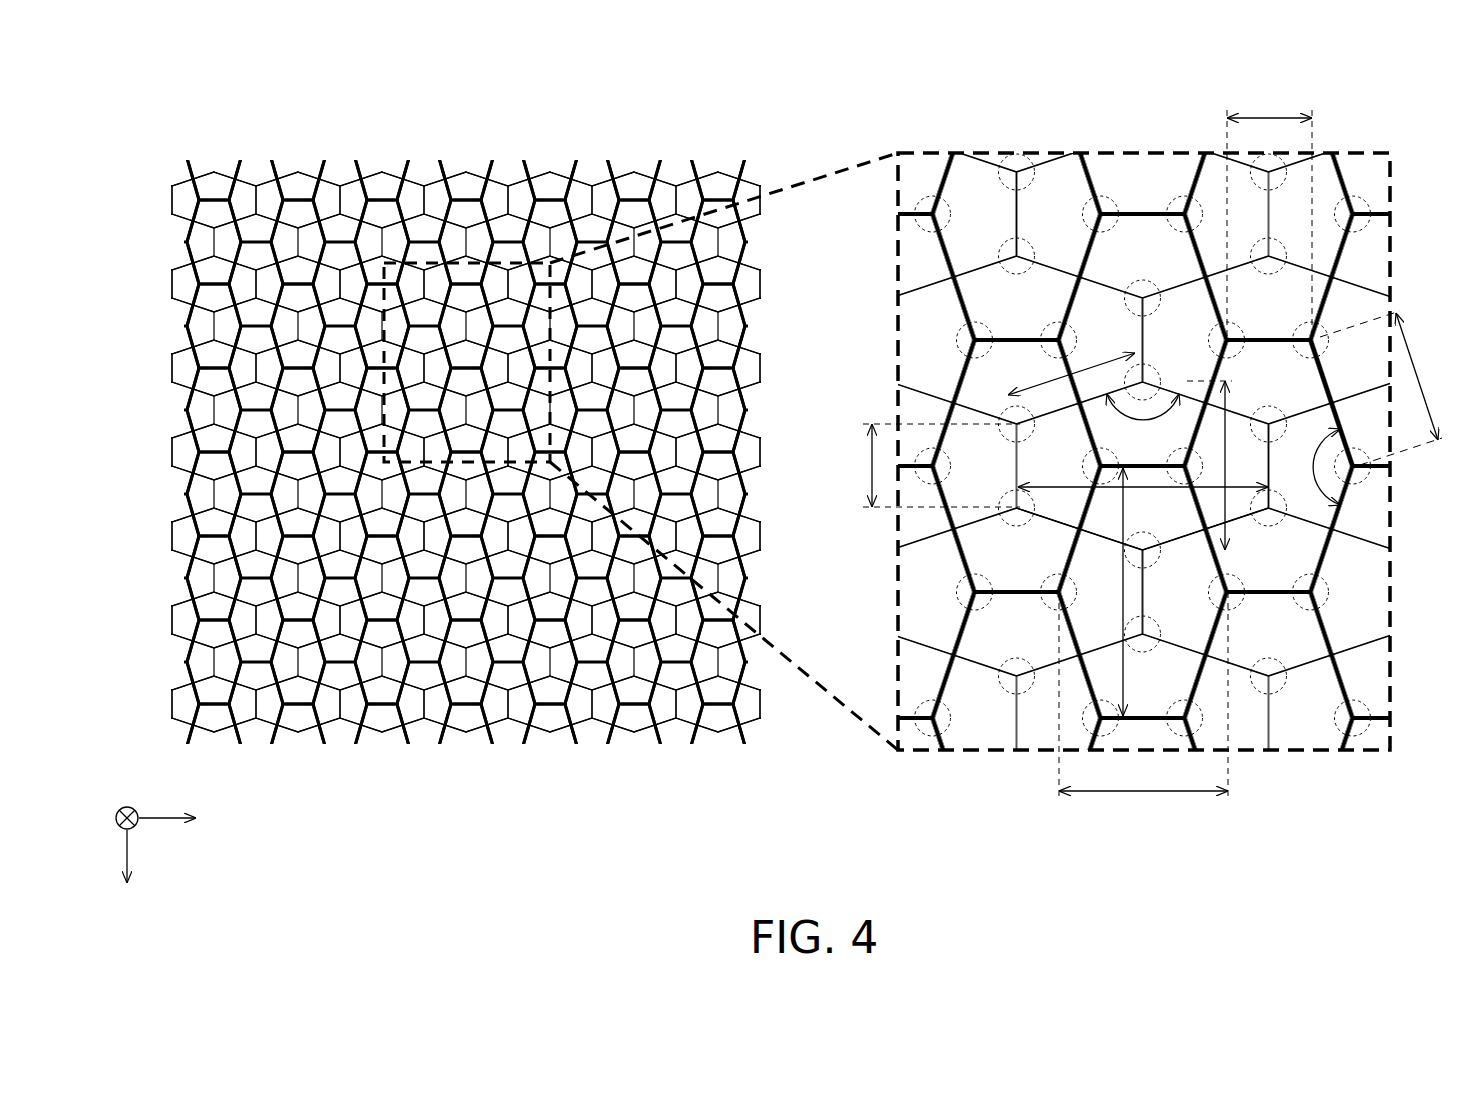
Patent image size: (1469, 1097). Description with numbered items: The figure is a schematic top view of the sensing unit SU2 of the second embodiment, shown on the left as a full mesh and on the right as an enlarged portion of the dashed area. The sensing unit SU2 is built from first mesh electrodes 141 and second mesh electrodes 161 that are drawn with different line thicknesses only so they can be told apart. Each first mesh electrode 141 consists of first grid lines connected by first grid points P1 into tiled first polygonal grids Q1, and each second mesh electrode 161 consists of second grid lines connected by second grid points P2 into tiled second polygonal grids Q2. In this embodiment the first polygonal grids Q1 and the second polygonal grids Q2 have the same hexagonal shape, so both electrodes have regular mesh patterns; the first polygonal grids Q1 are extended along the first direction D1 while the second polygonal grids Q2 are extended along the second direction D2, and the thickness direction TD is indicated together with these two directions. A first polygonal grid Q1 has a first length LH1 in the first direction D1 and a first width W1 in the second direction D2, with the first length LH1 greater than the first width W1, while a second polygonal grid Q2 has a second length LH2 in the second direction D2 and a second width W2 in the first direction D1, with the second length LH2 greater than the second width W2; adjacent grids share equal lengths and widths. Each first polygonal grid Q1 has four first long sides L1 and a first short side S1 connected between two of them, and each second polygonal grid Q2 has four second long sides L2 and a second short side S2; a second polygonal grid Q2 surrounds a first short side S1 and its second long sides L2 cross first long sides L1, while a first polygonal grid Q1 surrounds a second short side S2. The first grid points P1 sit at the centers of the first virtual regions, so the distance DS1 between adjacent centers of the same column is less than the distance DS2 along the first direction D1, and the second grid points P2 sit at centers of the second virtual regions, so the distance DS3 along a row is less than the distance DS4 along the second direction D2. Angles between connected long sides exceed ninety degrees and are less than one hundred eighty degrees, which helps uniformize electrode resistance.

The sensing unit SU2 is at (222, 115).
The first mesh electrode 141 is at (440, 175).
The second mesh electrode 161 is at (548, 191).
The first grid point P1 is at (1016, 242).
The second grid point P2 is at (972, 341).
The first polygonal grid Q1 is at (1056, 523).
The second polygonal grid Q2 is at (1145, 205).
The first long side L1 is at (1240, 518).
The second long side L2 is at (1323, 372).
The first short side S1 is at (1270, 475).
The second short side S2 is at (1270, 594).
The distance between center points of adjacent first virtual regions of the same col DS1 is at (920, 465).
The distance between center points of adjacent first virtual regions in the first di DS2 is at (1072, 360).
The distance between center points of adjacent second virtual regions of the same ro DS3 is at (1269, 213).
The distance between center points of adjacent second virtual regions in the second DS4 is at (1394, 388).
The first length LH1 is at (1143, 471).
The second length LH2 is at (1152, 592).
The first width W1 is at (1230, 465).
The second width W2 is at (1143, 709).
The thickness direction TD is at (122, 801).
The first direction D1 is at (189, 823).
The second direction D2 is at (126, 877).